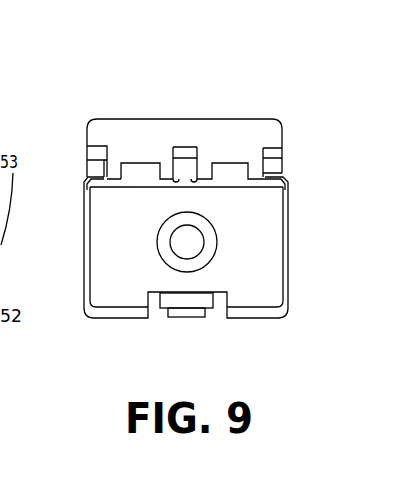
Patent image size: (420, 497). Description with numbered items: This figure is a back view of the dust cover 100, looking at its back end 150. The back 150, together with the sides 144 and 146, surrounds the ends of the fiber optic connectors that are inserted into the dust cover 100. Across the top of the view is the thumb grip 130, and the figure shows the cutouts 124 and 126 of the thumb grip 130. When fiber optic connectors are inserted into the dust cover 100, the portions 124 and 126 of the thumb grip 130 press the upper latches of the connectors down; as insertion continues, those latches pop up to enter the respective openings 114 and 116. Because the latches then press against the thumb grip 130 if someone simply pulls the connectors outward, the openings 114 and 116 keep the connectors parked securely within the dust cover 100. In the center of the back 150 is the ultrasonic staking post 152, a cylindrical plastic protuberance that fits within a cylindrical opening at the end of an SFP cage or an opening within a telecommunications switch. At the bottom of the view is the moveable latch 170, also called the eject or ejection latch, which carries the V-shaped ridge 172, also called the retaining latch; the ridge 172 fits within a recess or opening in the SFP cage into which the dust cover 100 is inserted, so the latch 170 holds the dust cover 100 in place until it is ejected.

The dust cover 100 is at (291, 193).
The opening 114 is at (230, 186).
The opening 116 is at (133, 186).
The cutout portion of thumb grip 124 is at (142, 162).
The cutout portion of thumb grip 126 is at (223, 161).
The thumb grip 130 is at (284, 127).
The side 144 is at (289, 210).
The side 146 is at (83, 234).
The back 150 is at (264, 247).
The ultrasonic staking post 152 is at (168, 245).
The moveable latch 170 is at (214, 311).
The V-shaped ridge 172 is at (183, 320).